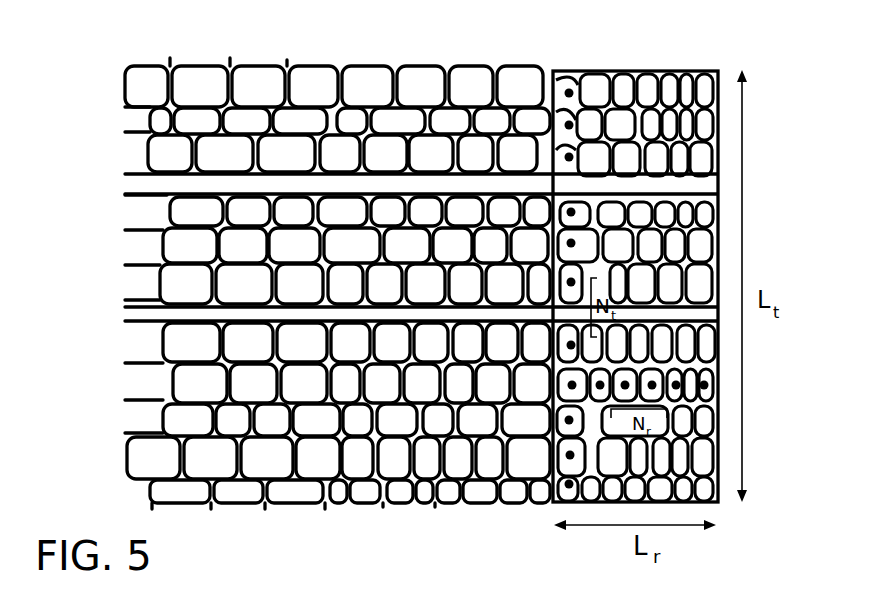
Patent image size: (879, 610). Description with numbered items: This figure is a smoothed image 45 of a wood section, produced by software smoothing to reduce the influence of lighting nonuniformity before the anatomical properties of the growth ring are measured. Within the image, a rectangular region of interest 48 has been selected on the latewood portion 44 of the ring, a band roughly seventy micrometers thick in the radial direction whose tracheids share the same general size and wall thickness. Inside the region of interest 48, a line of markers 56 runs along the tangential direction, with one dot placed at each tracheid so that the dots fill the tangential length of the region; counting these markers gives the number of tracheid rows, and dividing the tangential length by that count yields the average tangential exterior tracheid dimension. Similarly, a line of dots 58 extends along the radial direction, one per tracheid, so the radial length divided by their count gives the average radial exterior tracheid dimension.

The last latewood 44 is at (691, 58).
The smoothed image 45 is at (258, 52).
The region of interest 48 is at (594, 70).
The line of markers 56 is at (548, 80).
The line of dots 58 is at (718, 381).